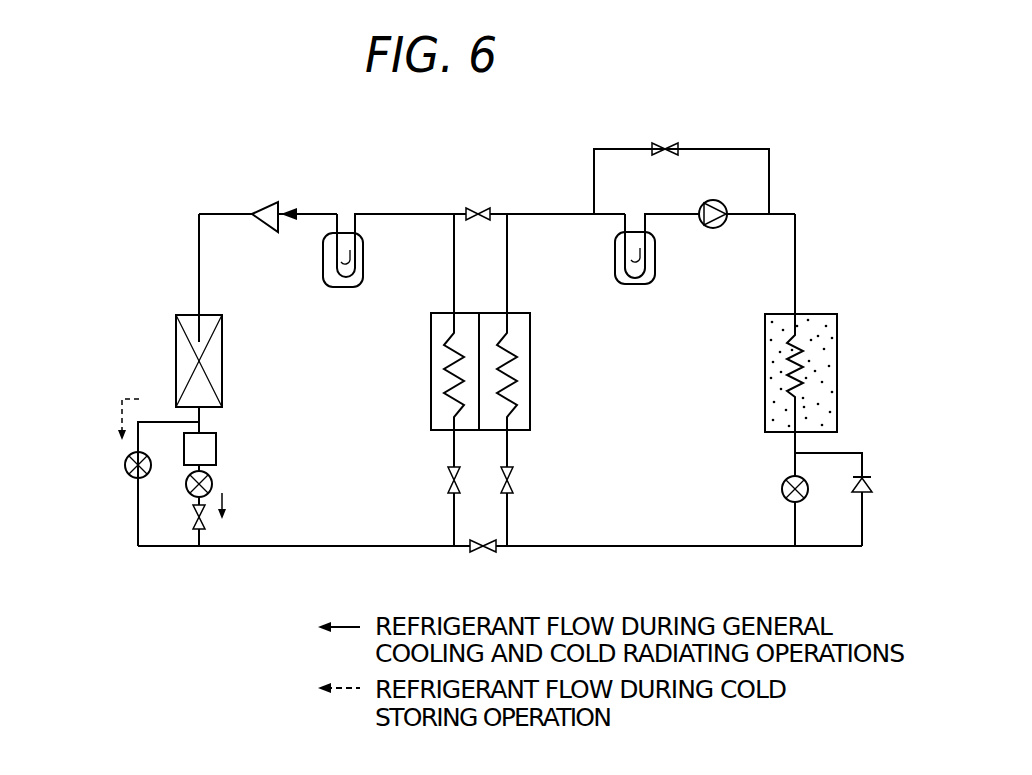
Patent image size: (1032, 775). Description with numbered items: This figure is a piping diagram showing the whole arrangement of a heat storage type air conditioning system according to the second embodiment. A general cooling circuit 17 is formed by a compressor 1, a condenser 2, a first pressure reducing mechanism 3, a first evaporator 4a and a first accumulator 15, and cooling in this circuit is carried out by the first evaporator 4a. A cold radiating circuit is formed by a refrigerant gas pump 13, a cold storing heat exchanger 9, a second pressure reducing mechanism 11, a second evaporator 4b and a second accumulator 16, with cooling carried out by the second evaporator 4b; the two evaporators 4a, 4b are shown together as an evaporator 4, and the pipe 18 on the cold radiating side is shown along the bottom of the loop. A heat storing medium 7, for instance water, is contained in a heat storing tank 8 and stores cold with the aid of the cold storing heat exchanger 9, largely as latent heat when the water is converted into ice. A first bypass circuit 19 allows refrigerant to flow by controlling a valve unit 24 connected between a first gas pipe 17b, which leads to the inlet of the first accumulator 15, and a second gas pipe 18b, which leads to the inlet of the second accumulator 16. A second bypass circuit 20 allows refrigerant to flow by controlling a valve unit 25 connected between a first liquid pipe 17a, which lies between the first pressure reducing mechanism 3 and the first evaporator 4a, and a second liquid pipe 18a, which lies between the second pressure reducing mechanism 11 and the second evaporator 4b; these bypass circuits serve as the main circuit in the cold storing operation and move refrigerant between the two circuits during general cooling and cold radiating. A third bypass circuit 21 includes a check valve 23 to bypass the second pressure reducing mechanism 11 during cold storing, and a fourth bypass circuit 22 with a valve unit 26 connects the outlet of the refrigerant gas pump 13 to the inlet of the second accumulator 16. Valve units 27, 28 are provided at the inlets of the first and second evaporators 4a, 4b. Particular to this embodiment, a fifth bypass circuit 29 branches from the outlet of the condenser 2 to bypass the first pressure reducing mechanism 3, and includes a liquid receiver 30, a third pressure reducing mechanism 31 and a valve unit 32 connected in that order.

The compressor 1 is at (263, 205).
The condenser 2 is at (222, 368).
The first pressure reducing mechanism 3 is at (147, 459).
The evaporator 4 is at (431, 352).
The first evaporator 4a is at (434, 412).
The second evaporator 4b is at (527, 388).
The heat storing medium 7 is at (826, 347).
The heat storing tank 8 is at (837, 408).
The cold storing heat exchanger 9 is at (788, 366).
The second pressure reducing mechanism 11 is at (786, 488).
The refrigerant gas pump 13 is at (723, 229).
The first accumulator 15 is at (325, 285).
The second accumulator 16 is at (656, 272).
The general cooling circuit 17 is at (332, 548).
The first liquid pipe 17a is at (371, 544).
The first gas pipe 17b is at (416, 218).
The refrigerant pipe 18 is at (610, 548).
The second liquid pipe 18a is at (578, 543).
The second gas pipe 18b is at (527, 218).
The first bypass circuit 19 is at (500, 210).
The second bypass circuit 20 is at (503, 549).
The third bypass circuit 21 is at (864, 527).
The fourth bypass circuit 22 is at (770, 180).
The check valve 23 is at (872, 485).
The valve unit 24 is at (474, 208).
The valve unit 25 is at (476, 552).
The valve unit 26 is at (659, 144).
The valve unit 27 is at (455, 483).
The valve unit 28 is at (512, 484).
The fifth bypass circuit 29 is at (200, 540).
The liquid receiver 30 is at (216, 448).
The third pressure reducing mechanism 31 is at (212, 483).
The valve unit 32 is at (190, 517).